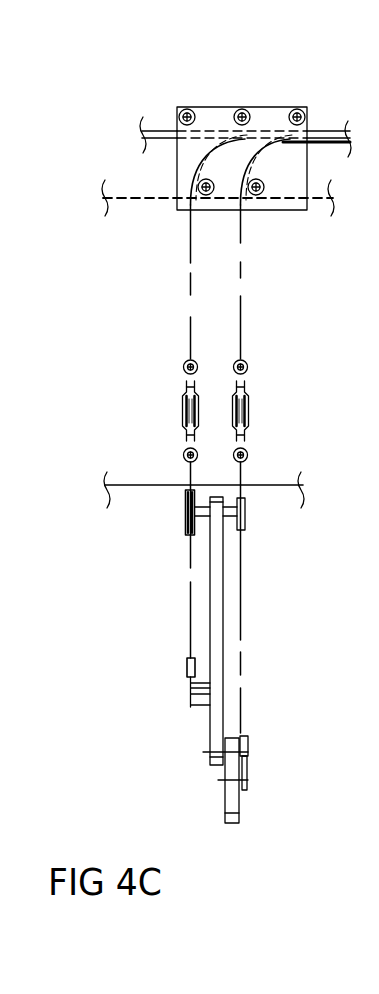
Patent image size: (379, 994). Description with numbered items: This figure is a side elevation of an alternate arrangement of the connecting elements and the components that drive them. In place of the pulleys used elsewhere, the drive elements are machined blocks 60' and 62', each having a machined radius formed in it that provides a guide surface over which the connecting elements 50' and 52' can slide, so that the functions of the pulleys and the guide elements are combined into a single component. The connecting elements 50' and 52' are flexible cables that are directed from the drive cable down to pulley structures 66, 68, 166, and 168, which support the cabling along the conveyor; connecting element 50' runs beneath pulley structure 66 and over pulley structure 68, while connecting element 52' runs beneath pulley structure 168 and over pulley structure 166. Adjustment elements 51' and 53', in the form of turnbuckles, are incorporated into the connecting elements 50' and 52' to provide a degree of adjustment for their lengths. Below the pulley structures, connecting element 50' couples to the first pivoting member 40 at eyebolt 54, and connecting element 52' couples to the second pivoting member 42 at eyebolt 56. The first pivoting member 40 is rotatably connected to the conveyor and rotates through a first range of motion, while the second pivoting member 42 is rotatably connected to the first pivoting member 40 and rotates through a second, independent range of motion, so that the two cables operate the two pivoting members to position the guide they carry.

The drive element block 62' is at (241, 123).
The drive element block 60' is at (250, 116).
The connecting element 52' is at (160, 247).
The connecting element 50' is at (287, 247).
The adjustment element 53' is at (152, 422).
The adjustment element 51' is at (280, 422).
The pulley structure 166 is at (126, 571).
The pulley structure 168 is at (185, 510).
The pulley structure 66 is at (305, 609).
The pulley structure 68 is at (245, 513).
The second pivoting member 42 is at (210, 720).
The eyebolt 56 is at (187, 667).
The eyebolt 54 is at (244, 737).
The first pivoting member 40 is at (237, 802).